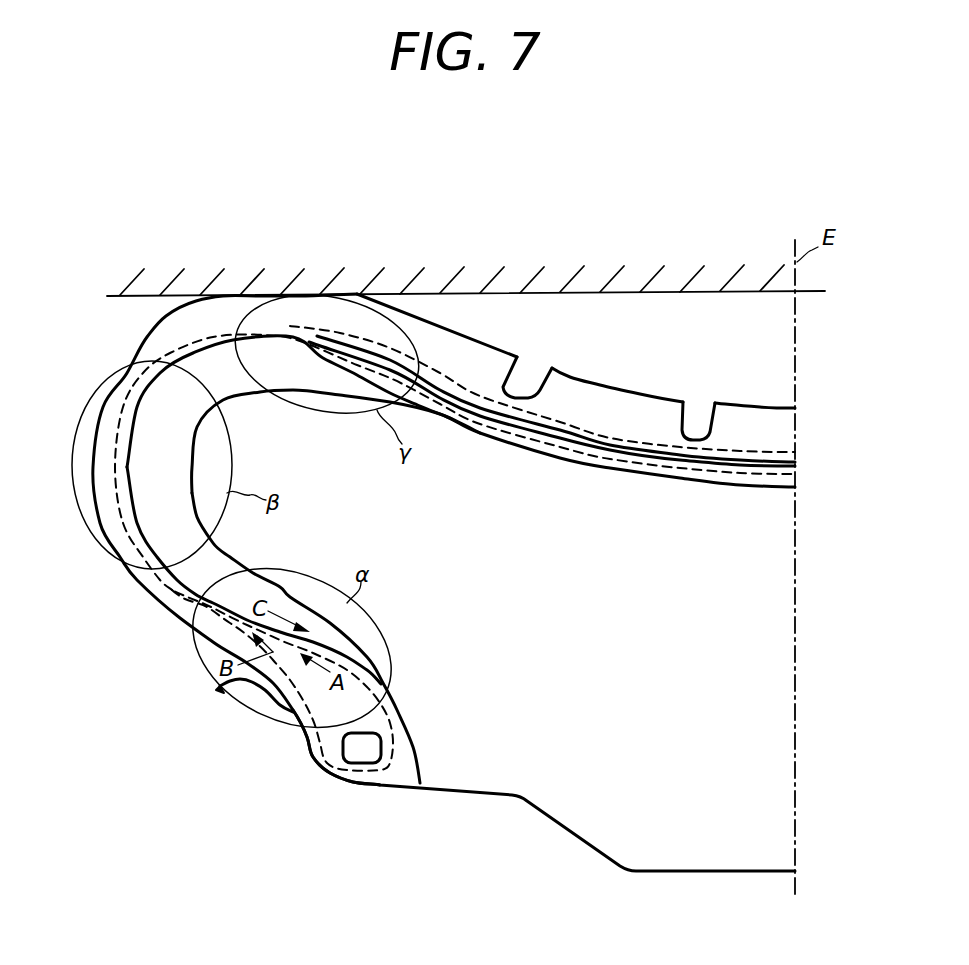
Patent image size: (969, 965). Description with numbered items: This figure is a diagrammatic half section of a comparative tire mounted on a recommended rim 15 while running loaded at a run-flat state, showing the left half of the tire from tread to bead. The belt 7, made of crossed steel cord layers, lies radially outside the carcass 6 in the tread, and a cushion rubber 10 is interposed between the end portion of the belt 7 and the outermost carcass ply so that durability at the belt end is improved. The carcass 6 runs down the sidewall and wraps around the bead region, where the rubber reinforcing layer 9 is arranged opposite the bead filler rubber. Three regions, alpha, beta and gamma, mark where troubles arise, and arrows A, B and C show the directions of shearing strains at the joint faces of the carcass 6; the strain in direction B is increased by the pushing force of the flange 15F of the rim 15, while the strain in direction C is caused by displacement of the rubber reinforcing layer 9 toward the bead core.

The carcass 6 is at (124, 409).
The belt 7 is at (618, 432).
The rubber reinforcing layer 9 is at (163, 477).
The cushion rubber 10 is at (307, 341).
The recommended rim 15 is at (481, 796).
The flange 15F is at (247, 697).